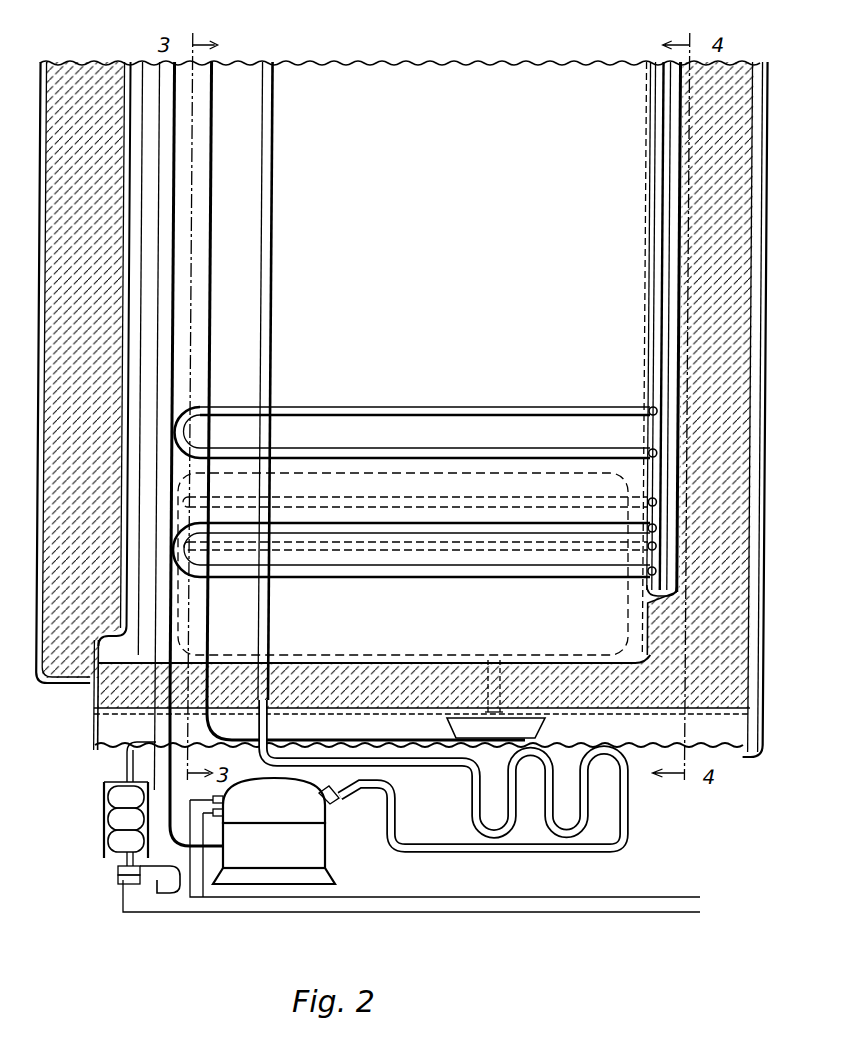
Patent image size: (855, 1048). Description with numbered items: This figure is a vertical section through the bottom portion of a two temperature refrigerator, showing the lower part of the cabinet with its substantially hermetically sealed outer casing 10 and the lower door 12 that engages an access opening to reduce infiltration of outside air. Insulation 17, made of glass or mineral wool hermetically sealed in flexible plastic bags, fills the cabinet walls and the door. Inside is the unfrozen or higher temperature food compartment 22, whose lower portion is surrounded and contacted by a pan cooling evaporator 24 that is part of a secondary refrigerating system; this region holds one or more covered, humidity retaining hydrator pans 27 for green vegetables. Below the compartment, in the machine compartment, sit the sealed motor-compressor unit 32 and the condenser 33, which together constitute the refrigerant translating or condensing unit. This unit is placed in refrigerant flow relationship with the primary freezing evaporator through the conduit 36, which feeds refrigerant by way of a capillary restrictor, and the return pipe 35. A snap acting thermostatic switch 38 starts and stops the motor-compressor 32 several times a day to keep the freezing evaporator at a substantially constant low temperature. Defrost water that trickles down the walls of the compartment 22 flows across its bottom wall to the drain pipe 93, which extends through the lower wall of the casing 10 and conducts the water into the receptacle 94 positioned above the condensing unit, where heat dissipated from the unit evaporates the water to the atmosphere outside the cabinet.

The outer casing 10 is at (767, 272).
The lower door 12 is at (36, 688).
The insulation 17 is at (735, 172).
The unfrozen food compartment 22 is at (464, 194).
The pan cooling evaporator 24 is at (413, 413).
The hydrator pan 27 is at (627, 626).
The sealed motor-compressor unit 32 is at (276, 831).
The condenser 33 is at (473, 812).
The return pipe 35 is at (165, 252).
The conduit 36 is at (268, 296).
The thermostatic switch 38 is at (102, 824).
The drain pipe 93 is at (466, 658).
The receptacle 94 is at (527, 744).